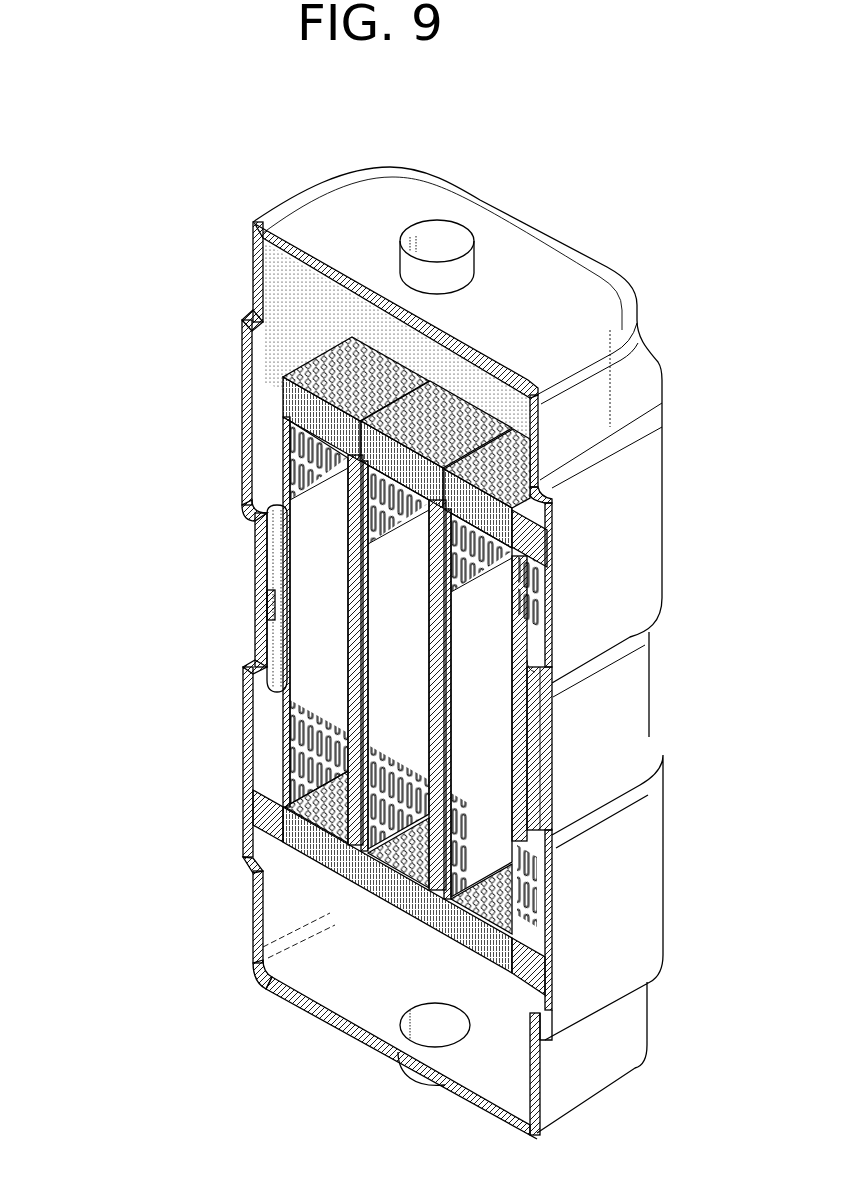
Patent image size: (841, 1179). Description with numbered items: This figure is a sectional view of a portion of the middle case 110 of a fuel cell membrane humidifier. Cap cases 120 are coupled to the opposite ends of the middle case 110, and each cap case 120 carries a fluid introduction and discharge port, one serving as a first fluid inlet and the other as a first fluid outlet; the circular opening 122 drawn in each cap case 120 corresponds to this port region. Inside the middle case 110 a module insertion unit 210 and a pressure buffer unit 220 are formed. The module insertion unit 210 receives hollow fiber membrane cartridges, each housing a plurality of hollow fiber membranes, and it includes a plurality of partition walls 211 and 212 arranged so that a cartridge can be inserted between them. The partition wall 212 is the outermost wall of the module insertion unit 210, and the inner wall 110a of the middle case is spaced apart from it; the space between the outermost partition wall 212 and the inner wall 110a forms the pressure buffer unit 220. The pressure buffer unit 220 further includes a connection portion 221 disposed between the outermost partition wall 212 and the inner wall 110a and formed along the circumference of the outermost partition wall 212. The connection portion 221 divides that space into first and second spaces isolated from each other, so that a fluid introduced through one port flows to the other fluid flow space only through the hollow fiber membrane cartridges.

The middle case 110 is at (205, 565).
The inner wall of the middle case 110a is at (275, 670).
The cap case 120 is at (253, 274).
The port 122 is at (437, 247).
The module insertion unit 210 is at (307, 632).
The partition wall 211 is at (313, 750).
The partition wall 212 is at (277, 697).
The pressure buffer unit 220 is at (277, 498).
The connection portion 221 is at (258, 617).